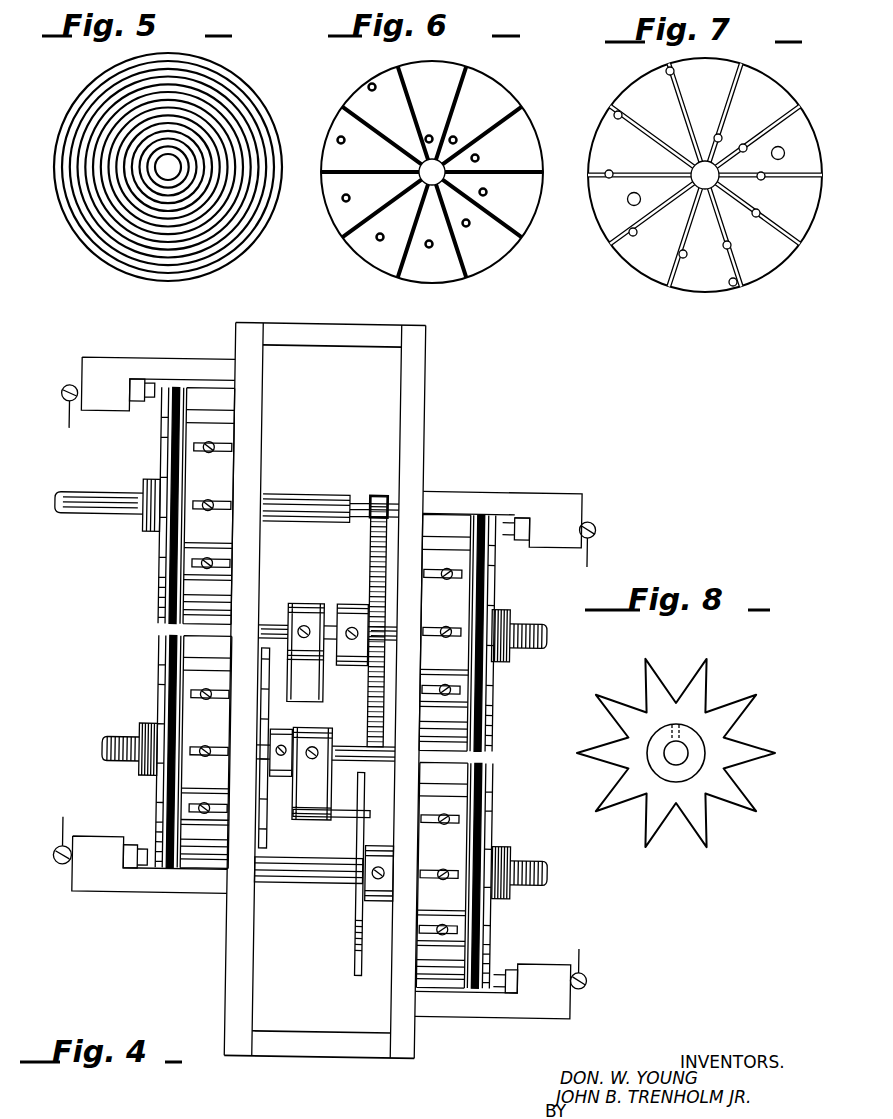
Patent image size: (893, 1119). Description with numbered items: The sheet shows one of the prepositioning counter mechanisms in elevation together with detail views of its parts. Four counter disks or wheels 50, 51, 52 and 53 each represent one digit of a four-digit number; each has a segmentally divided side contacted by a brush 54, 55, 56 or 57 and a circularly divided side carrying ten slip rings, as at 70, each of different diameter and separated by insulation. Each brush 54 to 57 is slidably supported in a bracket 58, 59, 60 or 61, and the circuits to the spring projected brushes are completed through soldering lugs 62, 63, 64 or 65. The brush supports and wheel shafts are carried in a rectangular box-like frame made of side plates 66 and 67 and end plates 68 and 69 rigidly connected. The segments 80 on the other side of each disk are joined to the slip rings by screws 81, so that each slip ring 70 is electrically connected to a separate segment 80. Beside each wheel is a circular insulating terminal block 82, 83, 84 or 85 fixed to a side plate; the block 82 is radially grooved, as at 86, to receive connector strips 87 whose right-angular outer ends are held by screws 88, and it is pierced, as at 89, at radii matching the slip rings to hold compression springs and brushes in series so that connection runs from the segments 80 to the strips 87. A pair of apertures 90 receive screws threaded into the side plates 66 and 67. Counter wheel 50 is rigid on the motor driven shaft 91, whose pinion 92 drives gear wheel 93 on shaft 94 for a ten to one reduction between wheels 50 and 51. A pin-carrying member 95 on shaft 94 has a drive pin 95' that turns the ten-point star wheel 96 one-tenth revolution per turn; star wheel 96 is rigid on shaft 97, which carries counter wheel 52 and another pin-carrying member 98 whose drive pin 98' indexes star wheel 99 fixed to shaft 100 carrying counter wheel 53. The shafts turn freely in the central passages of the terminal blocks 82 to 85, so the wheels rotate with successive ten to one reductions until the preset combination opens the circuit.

In FIG. 4, the counter wheel 50 is at (156, 590).
In FIG. 4, the counter wheel 51 is at (492, 708).
In FIG. 4, the counter wheel 52 is at (158, 660).
In FIG. 4, the counter wheel 53 is at (493, 795).
In FIG. 4, the brush 54 is at (146, 403).
In FIG. 4, the brush 55 is at (509, 538).
In FIG. 4, the brush 56 is at (151, 849).
In FIG. 4, the brush 57 is at (501, 979).
In FIG. 4, the bracket 58 is at (115, 361).
In FIG. 4, the bracket 59 is at (490, 490).
In FIG. 4, the bracket 60 is at (113, 897).
In FIG. 4, the bracket 61 is at (457, 1018).
In FIG. 4, the soldering lug 62 is at (65, 413).
In FIG. 4, the soldering lug 63 is at (600, 544).
In FIG. 4, the soldering lug 64 is at (65, 834).
In FIG. 4, the soldering lug 65 is at (586, 959).
In FIG. 4, the side plate 66 is at (252, 401).
In FIG. 4, the side plate 67 is at (413, 391).
In FIG. 4, the end plate 68 is at (285, 324).
In FIG. 4, the end plate 69 is at (273, 1060).
In FIG. 5, the slip ring 70 is at (162, 268).
In FIG. 6, the segment 80 is at (490, 95).
In FIG. 6, the screw 81 is at (368, 86).
In FIG. 7, the terminal block 82 is at (654, 270).
In FIG. 4, the terminal block 82 is at (220, 487).
In FIG. 4, the terminal block 83 is at (457, 619).
In FIG. 4, the terminal block 84 is at (222, 737).
In FIG. 4, the terminal block 85 is at (458, 856).
In FIG. 7, the radial groove 86 is at (733, 282).
In FIG. 4, the connector strip 87 is at (227, 498).
In FIG. 4, the screw 88 is at (206, 510).
In FIG. 7, the aperture 89 is at (618, 114).
In FIG. 7, the aperture 90 is at (784, 150).
In FIG. 4, the motor driven shaft 91 is at (66, 500).
In FIG. 4, the pinion 92 is at (382, 480).
In FIG. 4, the gear wheel 93 is at (368, 558).
In FIG. 4, the shaft 94 is at (273, 618).
In FIG. 4, the pin-carrying member 95 is at (338, 623).
In FIG. 4, the drive pin 95' is at (327, 675).
In FIG. 8, the star wheel 96 is at (690, 834).
In FIG. 4, the star wheel 96 is at (270, 849).
In FIG. 4, the shaft 97 is at (383, 764).
In FIG. 4, the pin-carrying member 98 is at (325, 774).
In FIG. 4, the drive pin 98' is at (331, 834).
In FIG. 4, the star wheel 99 is at (361, 948).
In FIG. 4, the shaft 100 is at (283, 890).